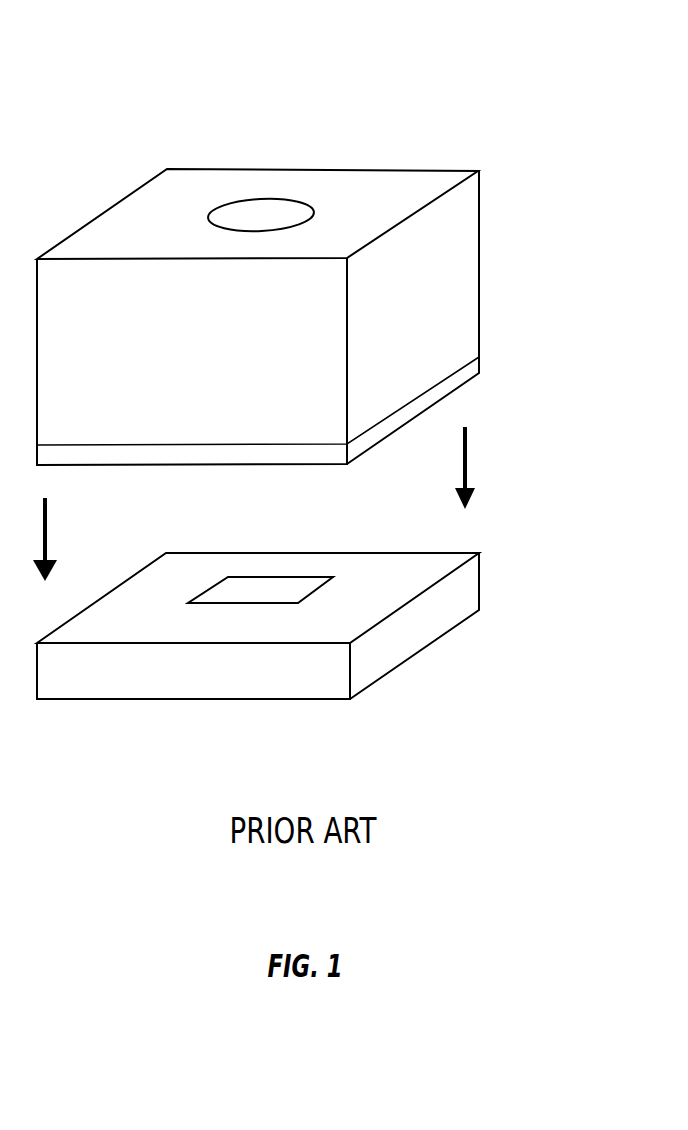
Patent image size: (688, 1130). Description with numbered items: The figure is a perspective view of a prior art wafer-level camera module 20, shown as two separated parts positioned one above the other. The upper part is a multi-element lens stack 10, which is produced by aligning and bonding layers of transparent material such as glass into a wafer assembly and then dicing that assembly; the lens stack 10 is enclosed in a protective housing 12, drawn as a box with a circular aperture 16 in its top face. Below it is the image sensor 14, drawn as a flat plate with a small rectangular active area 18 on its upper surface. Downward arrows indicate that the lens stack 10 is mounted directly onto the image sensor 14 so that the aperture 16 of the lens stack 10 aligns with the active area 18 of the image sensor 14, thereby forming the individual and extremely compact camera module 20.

The lens stack 10 is at (531, 201).
The protective housing 12 is at (481, 299).
The image sensor 14 is at (481, 584).
The aperture 16 is at (273, 197).
The active area 18 is at (287, 577).
The camera module 20 is at (98, 90).